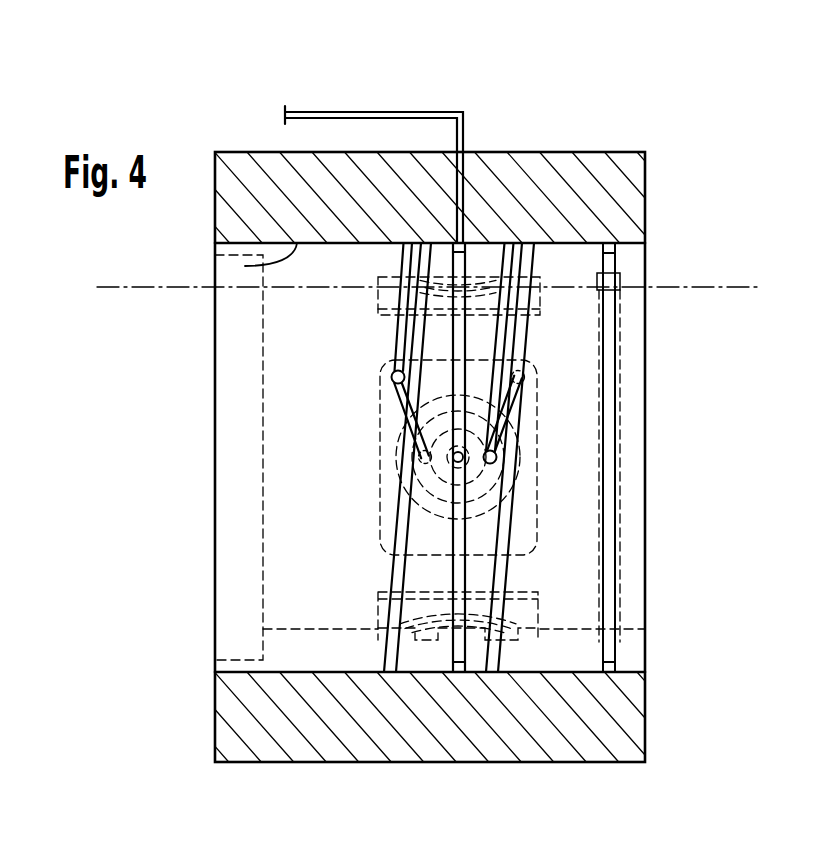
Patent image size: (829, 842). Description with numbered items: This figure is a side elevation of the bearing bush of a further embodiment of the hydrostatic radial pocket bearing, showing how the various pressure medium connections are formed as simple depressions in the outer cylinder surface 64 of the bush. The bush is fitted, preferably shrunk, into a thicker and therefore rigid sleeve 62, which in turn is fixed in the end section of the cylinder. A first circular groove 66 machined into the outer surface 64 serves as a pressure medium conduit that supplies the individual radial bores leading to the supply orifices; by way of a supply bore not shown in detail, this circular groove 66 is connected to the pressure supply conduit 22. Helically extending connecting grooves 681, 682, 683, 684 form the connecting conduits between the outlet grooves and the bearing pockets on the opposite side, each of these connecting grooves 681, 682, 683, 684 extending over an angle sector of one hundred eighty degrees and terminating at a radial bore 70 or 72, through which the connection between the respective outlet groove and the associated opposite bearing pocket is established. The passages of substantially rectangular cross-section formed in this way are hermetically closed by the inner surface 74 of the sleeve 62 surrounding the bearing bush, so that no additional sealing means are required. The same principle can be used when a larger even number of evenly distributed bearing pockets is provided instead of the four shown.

The supply conduit 22 is at (343, 110).
The sleeve 62 is at (578, 170).
The outer cylinder surface 64 is at (580, 243).
The first circular groove 66 is at (468, 574).
The connecting groove 681 is at (398, 518).
The connecting groove 682 is at (397, 336).
The connecting groove 683 is at (500, 333).
The connecting groove 684 is at (512, 410).
The radial bore 70 is at (391, 380).
The radial bore 72 is at (496, 459).
The inner surface 74 is at (245, 266).